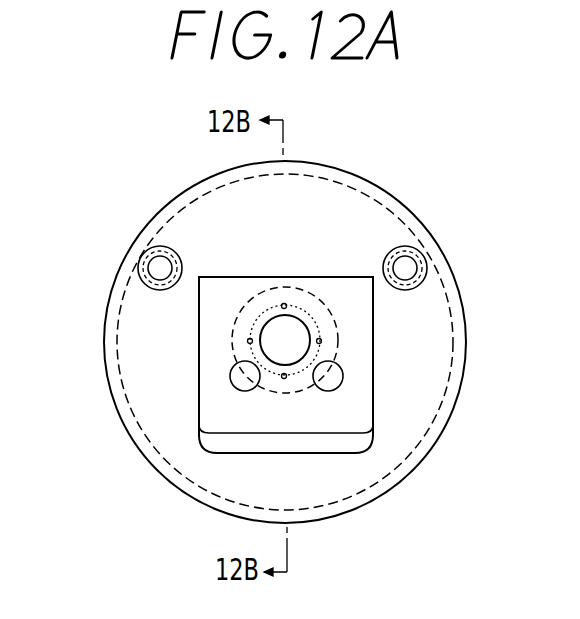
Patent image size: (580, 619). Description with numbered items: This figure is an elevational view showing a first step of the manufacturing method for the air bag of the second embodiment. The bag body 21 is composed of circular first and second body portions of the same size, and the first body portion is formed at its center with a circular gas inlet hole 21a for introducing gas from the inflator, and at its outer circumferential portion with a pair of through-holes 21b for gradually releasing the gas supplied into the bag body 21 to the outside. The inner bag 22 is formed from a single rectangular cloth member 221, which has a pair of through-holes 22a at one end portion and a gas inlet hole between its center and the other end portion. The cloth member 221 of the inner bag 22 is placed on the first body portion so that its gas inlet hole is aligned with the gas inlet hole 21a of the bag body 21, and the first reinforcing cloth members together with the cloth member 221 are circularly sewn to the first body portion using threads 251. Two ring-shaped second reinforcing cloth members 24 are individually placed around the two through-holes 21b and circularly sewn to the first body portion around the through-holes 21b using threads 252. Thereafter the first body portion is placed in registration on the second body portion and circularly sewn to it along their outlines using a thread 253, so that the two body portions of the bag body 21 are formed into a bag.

The bag body 21 is at (468, 330).
The thread 253 is at (125, 288).
The second reinforcing cloth members 24 is at (165, 246).
The through-holes 21b is at (160, 268).
The threads 252 is at (153, 244).
The inner bag 22 is at (373, 364).
The cloth member 221 is at (342, 417).
The gas inlet hole 21a is at (280, 342).
The through-holes 22a is at (245, 385).
The threads 251 is at (300, 304).